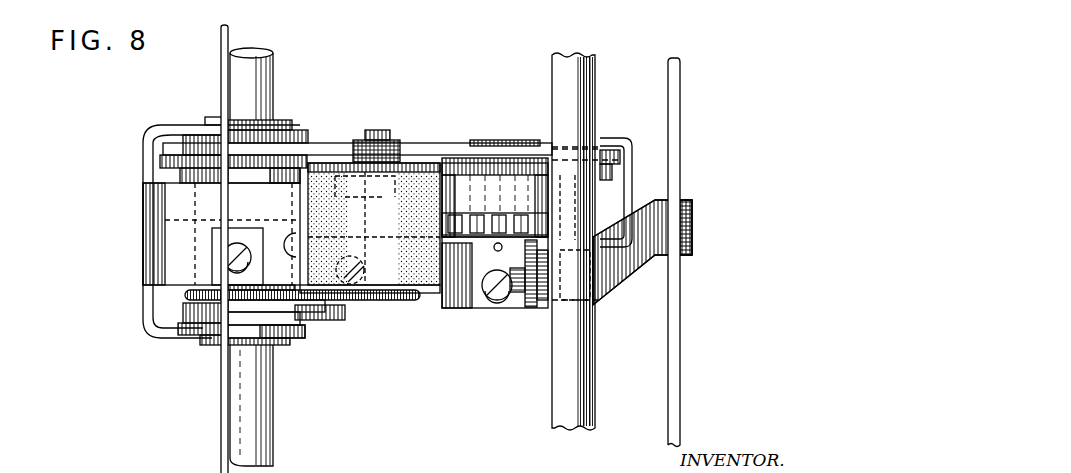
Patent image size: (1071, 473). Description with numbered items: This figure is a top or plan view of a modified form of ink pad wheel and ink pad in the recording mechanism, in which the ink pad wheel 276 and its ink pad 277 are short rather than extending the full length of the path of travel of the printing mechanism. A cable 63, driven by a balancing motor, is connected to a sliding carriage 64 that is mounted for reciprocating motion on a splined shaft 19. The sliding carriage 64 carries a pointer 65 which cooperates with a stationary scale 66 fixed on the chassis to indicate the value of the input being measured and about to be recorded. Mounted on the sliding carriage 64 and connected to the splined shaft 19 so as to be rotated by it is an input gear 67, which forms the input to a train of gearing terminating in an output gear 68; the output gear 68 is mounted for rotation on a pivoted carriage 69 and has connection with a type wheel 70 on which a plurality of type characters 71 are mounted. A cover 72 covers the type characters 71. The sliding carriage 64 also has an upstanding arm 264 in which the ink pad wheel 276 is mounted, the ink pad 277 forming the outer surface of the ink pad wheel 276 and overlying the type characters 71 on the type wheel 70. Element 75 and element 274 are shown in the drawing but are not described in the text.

The cable 63 is at (221, 40).
The splined shaft 19 is at (270, 80).
The input gear 67 is at (172, 155).
The block 75 is at (312, 160).
The pivoted carriage 69 is at (417, 143).
The output gear 68 is at (500, 158).
The cover 72 is at (627, 170).
The stationary scale 66 is at (681, 92).
The type wheel 70 is at (483, 213).
The pointer 65 is at (694, 226).
The sliding carriage 64 is at (157, 233).
The type characters 71 is at (473, 300).
The ink pad 277 is at (422, 262).
The ink pad wheel 276 is at (385, 326).
The plate 274 is at (352, 312).
The upstanding arm 264 is at (332, 322).